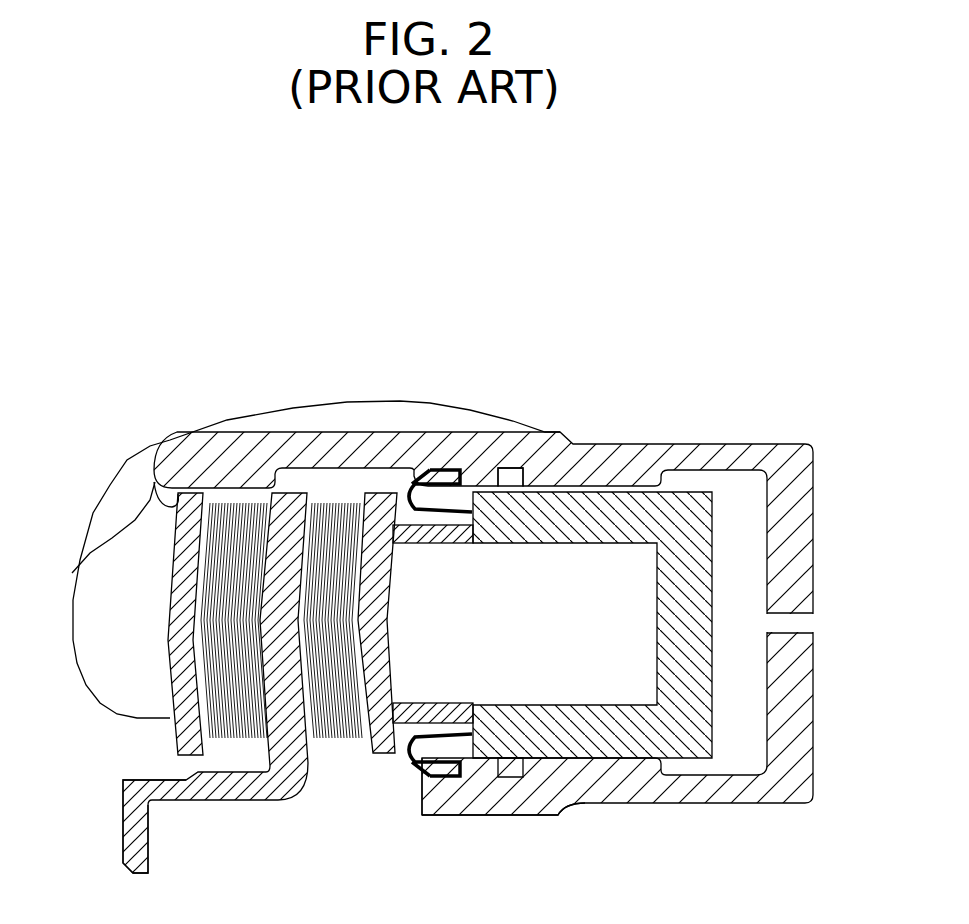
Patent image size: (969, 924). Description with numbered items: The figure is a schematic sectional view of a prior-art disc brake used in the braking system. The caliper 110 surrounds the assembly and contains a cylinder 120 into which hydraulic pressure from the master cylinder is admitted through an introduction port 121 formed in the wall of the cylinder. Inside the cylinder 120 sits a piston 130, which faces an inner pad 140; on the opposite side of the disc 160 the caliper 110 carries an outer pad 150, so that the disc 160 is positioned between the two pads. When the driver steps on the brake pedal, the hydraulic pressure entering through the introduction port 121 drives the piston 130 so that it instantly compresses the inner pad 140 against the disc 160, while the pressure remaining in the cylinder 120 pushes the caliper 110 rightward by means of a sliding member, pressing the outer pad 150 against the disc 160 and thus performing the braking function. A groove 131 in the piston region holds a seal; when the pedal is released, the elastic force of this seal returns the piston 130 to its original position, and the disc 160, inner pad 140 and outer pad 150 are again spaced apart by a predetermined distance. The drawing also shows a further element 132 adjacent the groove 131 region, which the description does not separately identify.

The caliper 110 is at (403, 413).
The cylinder 120 is at (573, 448).
The introduction port 121 is at (806, 622).
The piston 130 is at (703, 737).
The groove 131 is at (502, 780).
The bottom cover 132 is at (532, 767).
The inner pad 140 is at (327, 738).
The outer pad 150 is at (227, 737).
The disc 160 is at (132, 828).